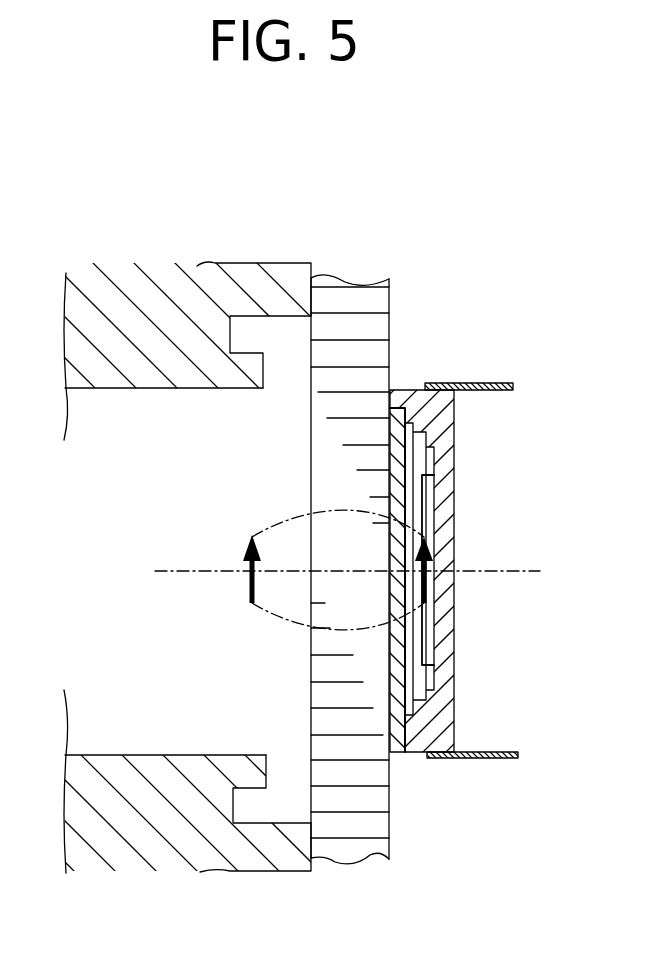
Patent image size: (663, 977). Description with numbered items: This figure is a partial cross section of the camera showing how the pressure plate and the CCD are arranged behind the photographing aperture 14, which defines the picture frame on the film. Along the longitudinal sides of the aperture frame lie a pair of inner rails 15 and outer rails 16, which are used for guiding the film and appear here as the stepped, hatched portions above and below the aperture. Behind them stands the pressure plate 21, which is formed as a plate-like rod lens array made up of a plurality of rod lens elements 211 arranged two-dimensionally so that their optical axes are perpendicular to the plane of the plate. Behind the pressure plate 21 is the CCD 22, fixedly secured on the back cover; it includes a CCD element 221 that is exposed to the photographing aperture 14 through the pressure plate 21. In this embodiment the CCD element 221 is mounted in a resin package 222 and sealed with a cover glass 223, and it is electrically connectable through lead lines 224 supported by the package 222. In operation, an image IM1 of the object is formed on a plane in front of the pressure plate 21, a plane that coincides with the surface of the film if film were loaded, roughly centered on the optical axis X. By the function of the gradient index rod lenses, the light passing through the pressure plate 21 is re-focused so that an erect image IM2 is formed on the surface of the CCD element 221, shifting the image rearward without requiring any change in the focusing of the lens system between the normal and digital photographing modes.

The photographing aperture 14 is at (119, 670).
The inner rails 15 is at (242, 368).
The outer rails 16 is at (298, 290).
The pressure plate 21 is at (355, 575).
The rod lens elements 211 is at (327, 720).
The CCD 22 is at (343, 568).
The CCD element 221 is at (433, 520).
The resin package 222 is at (443, 440).
The cover glass 223 is at (398, 696).
The lead lines 224 is at (489, 383).
The optical axis X is at (183, 571).
The image formed in front of the pressure plate IM1 is at (247, 597).
The erect image re-focused on the CCD element IM2 is at (427, 590).